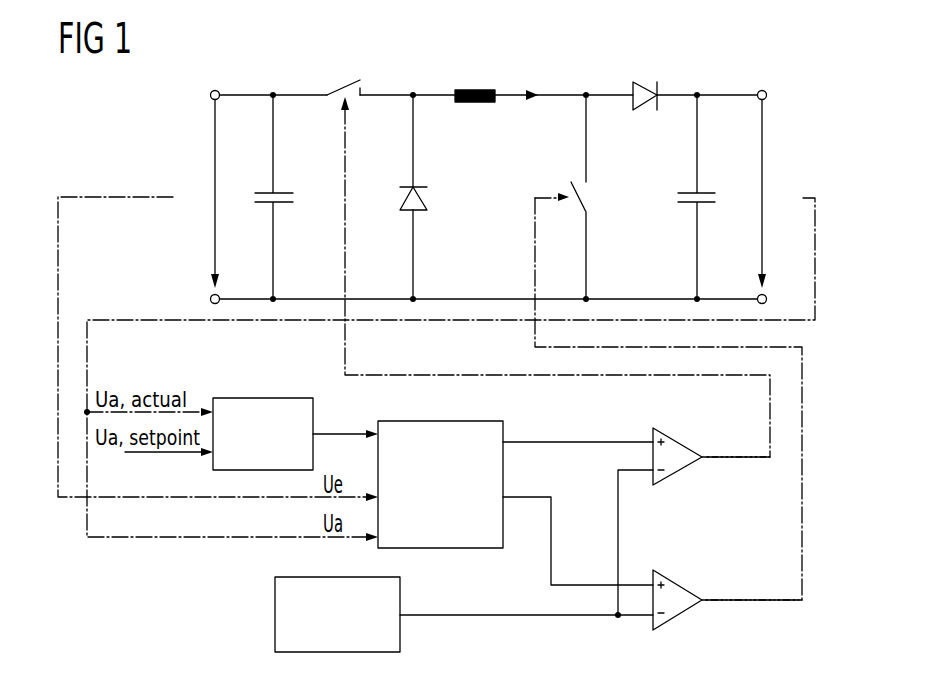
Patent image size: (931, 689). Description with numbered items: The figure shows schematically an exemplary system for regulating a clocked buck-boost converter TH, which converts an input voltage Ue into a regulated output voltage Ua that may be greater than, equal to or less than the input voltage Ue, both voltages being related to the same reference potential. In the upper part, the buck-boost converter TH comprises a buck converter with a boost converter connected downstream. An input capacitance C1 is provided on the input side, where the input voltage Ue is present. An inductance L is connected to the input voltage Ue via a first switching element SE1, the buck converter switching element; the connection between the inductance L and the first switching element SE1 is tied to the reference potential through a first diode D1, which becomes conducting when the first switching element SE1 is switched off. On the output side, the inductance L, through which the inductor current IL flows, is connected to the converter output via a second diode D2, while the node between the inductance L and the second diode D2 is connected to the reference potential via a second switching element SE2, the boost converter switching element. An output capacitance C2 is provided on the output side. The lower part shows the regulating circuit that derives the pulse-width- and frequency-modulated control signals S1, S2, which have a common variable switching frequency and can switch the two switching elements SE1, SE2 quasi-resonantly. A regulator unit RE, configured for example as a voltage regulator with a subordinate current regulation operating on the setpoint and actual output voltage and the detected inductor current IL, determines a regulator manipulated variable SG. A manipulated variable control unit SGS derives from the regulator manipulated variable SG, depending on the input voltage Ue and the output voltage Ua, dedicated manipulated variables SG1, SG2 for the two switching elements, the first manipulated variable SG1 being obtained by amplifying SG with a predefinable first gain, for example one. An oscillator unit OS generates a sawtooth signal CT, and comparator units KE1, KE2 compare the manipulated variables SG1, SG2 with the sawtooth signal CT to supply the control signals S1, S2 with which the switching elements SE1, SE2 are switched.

The buck-boost converter TH is at (168, 132).
The first switching element SE1 is at (345, 73).
The second switching element SE2 is at (586, 193).
The inductance L is at (475, 87).
The inductor current IL is at (533, 80).
The first diode D1 is at (421, 193).
The second diode D2 is at (648, 84).
The input capacitance C1 is at (280, 190).
The output capacitance C2 is at (703, 190).
The input voltage Ue is at (203, 194).
The output voltage Ua is at (775, 194).
The regulator unit RE is at (263, 434).
The regulator manipulated variable SG is at (345, 428).
The manipulated variable control unit SGS is at (440, 484).
The first manipulated variable SG1 is at (578, 432).
The second manipulated variable SG2 is at (578, 529).
The oscillator unit OS is at (337, 614).
The sawtooth signal CT is at (526, 544).
The first comparator unit KE1 is at (677, 442).
The second comparator unit KE2 is at (677, 585).
The first control signal S1 is at (736, 445).
The second control signal S2 is at (752, 589).